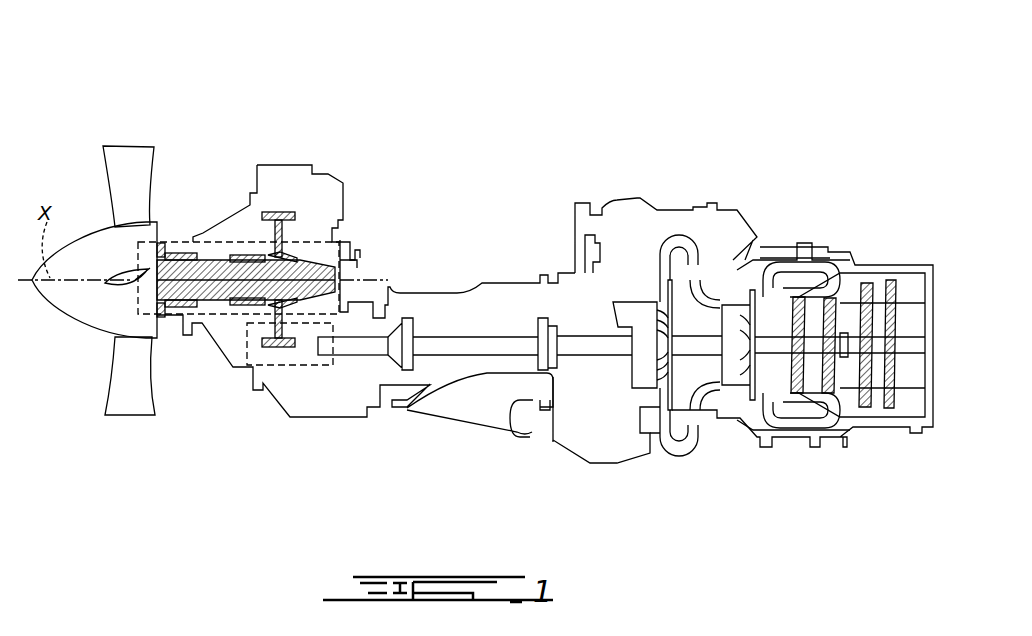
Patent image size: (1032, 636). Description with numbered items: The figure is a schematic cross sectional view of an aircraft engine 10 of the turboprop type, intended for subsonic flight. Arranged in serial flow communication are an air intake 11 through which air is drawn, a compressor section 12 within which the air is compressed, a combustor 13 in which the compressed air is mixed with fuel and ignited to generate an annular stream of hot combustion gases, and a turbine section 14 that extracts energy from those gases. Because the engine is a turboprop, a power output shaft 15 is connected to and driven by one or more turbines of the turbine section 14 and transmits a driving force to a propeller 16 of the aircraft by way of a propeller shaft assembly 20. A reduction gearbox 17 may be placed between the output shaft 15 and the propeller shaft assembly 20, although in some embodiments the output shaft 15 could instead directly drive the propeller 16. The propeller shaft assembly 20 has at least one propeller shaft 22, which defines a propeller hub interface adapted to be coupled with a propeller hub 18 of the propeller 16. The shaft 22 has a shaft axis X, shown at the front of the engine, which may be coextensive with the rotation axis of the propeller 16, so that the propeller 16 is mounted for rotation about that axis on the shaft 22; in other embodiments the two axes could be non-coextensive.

The aircraft engine 10 is at (875, 138).
The air intake 11 is at (453, 427).
The compressor section 12 is at (607, 288).
The combustor 13 is at (777, 270).
The turbine section 14 is at (853, 313).
The power output shaft 15 is at (494, 340).
The propeller 16 is at (118, 145).
The reduction gearbox 17 is at (272, 365).
The propeller hub 18 is at (157, 225).
The propeller shaft assembly 20 is at (293, 187).
The propeller shaft 22 is at (220, 268).